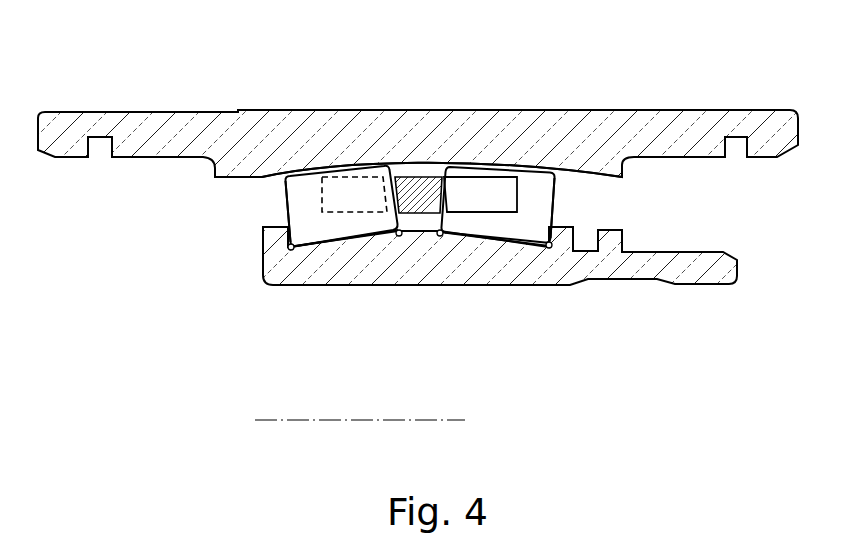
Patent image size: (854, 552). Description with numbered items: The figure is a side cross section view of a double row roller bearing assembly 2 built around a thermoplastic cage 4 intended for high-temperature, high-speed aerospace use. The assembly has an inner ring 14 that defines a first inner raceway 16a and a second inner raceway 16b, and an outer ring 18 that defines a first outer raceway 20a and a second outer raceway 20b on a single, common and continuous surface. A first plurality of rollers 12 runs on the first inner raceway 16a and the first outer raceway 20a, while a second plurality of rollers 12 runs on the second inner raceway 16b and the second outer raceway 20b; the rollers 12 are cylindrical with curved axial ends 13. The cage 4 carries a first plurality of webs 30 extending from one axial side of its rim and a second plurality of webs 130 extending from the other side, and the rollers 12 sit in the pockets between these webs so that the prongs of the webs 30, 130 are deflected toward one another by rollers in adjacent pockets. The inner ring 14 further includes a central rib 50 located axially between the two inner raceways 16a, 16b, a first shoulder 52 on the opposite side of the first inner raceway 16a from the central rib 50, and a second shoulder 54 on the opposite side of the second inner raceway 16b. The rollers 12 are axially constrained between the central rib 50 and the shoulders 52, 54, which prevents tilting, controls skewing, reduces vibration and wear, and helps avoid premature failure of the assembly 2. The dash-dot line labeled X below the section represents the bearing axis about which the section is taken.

The double row roller bearing assembly 2 is at (638, 102).
The cage 4 is at (416, 188).
The rollers 12 is at (532, 185).
The curved axial ends 13 is at (556, 168).
The inner ring 14 is at (402, 257).
The first inner raceway 16a is at (329, 241).
The second inner raceway 16b is at (497, 245).
The outer ring 18 is at (291, 135).
The first outer raceway 20a is at (346, 168).
The second outer raceway 20b is at (500, 168).
The first plurality of webs 30 is at (337, 198).
The central rib 50 is at (418, 240).
The first shoulder 52 is at (277, 242).
The second shoulder 54 is at (561, 237).
The second plurality of webs 130 is at (492, 195).
The axis X is at (272, 422).